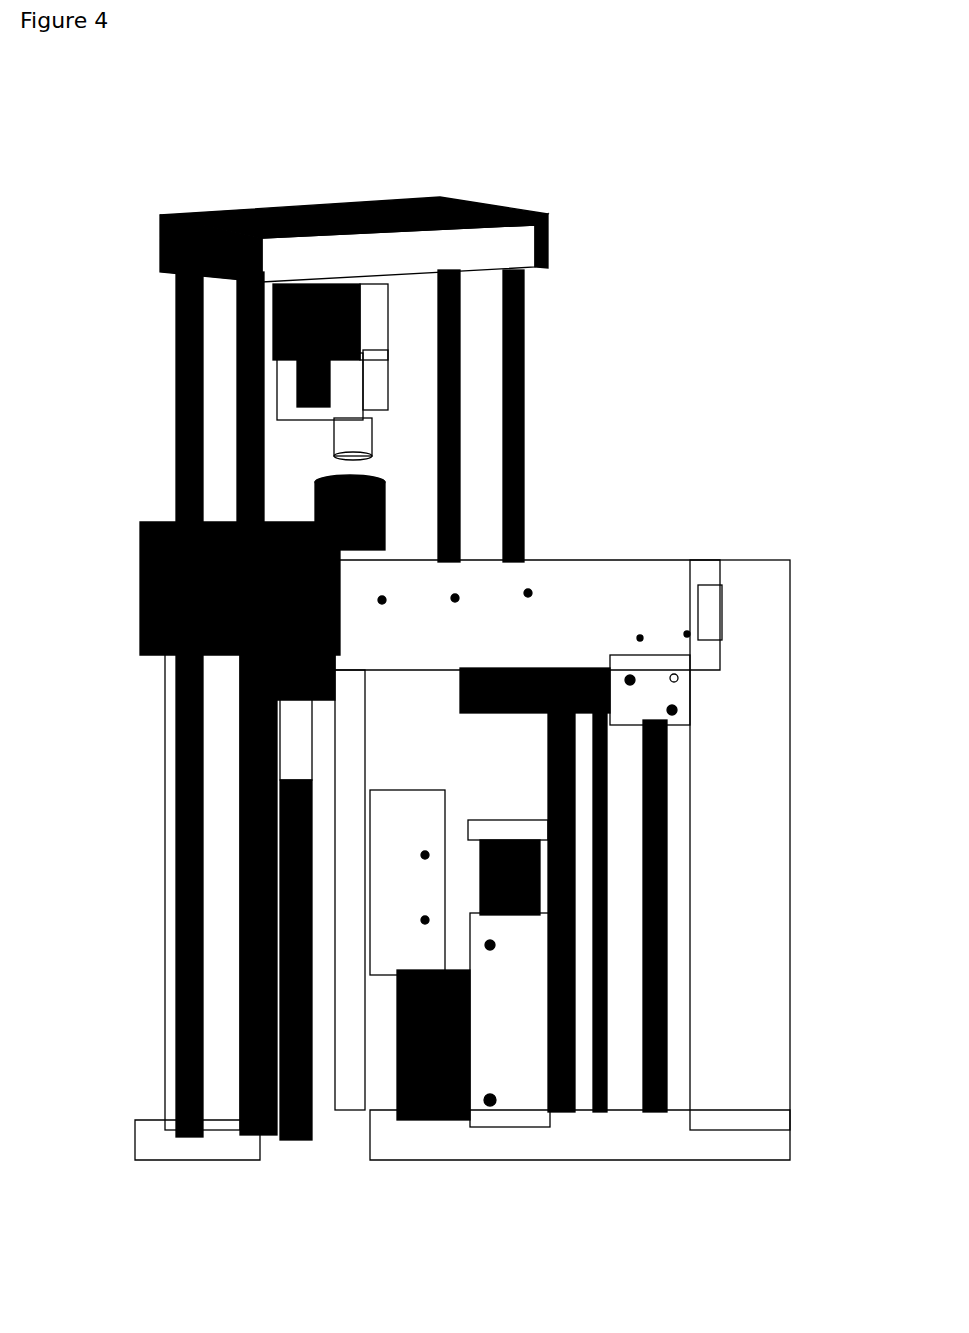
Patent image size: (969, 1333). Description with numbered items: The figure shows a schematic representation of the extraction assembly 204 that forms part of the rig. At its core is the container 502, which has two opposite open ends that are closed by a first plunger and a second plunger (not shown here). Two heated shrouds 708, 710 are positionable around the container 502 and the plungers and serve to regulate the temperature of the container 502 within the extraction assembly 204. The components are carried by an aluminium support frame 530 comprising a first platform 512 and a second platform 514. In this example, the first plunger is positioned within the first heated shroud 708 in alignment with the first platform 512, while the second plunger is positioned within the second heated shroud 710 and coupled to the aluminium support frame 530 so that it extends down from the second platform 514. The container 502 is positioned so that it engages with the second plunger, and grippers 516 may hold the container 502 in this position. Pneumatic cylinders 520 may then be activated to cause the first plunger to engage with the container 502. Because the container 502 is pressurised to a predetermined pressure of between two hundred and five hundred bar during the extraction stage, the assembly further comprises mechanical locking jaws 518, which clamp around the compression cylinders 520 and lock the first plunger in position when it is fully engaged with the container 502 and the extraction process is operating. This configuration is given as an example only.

The extraction assembly 204 is at (185, 183).
The second platform 514 is at (190, 241).
The grippers 516 is at (345, 413).
The first platform 512 is at (183, 612).
The second heated shroud 710 is at (355, 345).
The container 502 is at (358, 433).
The first heated shroud 708 is at (355, 527).
The mechanical locking jaws 518 is at (487, 604).
The aluminium support frame 530 is at (707, 830).
The pneumatic cylinders 520 is at (393, 832).